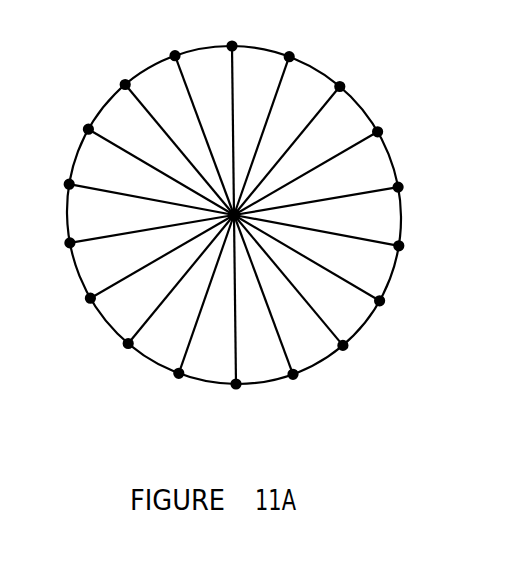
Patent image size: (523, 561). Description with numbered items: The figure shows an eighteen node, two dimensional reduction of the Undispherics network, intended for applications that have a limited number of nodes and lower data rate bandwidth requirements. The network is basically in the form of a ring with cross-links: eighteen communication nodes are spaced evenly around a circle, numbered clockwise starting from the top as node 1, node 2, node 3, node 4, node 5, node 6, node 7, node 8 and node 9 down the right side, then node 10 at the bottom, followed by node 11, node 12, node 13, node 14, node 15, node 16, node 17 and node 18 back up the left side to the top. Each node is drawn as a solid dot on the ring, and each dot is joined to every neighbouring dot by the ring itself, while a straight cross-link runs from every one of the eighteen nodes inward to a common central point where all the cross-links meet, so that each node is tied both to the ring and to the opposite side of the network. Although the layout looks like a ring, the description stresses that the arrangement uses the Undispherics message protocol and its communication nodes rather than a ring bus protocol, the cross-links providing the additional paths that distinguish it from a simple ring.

The node 1 is at (232, 46).
The node 2 is at (289, 57).
The node 3 is at (340, 86).
The node 4 is at (378, 132).
The node 5 is at (398, 187).
The node 6 is at (399, 246).
The node 7 is at (380, 301).
The node 8 is at (343, 345).
The node 9 is at (293, 374).
The node 10 is at (236, 384).
The node 11 is at (179, 373).
The node 12 is at (128, 344).
The node 13 is at (90, 298).
The node 14 is at (70, 243).
The node 15 is at (69, 184).
The node 16 is at (88, 129).
The node 17 is at (125, 84).
The node 18 is at (175, 56).